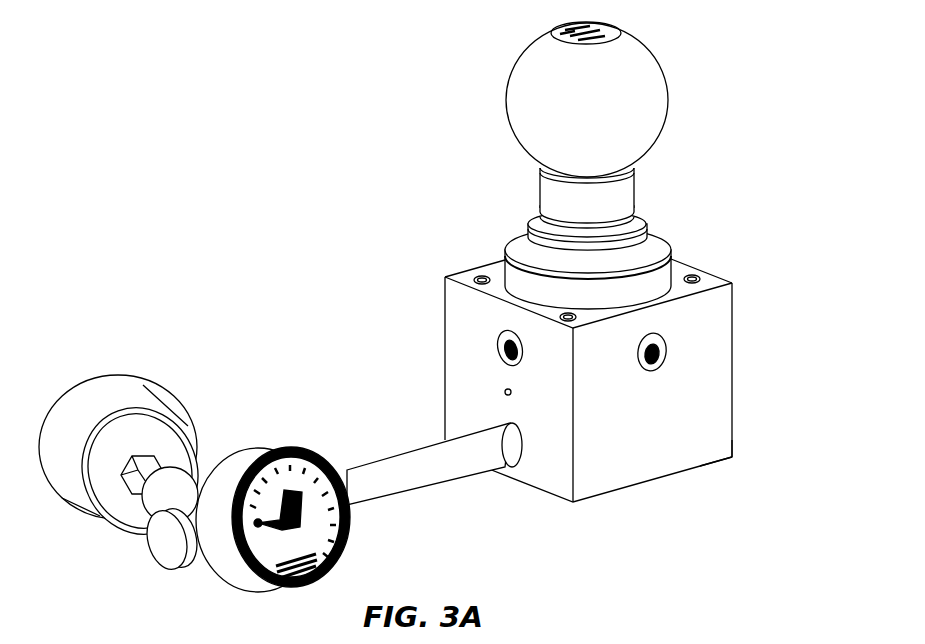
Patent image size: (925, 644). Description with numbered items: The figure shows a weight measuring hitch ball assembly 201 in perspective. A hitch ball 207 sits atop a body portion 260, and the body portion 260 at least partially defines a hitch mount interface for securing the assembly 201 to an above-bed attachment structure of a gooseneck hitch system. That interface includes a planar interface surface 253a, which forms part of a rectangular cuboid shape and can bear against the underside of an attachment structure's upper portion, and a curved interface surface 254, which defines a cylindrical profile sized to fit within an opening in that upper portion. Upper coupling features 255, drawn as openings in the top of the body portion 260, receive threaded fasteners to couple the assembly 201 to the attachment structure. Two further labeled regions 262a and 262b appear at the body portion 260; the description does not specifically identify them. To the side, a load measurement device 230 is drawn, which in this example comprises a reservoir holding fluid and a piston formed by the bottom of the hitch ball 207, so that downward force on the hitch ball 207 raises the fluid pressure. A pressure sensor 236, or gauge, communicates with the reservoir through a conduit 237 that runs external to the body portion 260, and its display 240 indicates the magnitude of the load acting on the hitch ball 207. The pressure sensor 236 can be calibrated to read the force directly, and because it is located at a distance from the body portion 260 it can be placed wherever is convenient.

The weight measuring hitch ball assembly 201 is at (255, 50).
The hitch ball 207 is at (480, 43).
The body portion 260 is at (493, 248).
The coupling features 255 is at (473, 273).
The curved interface surface 254 is at (653, 273).
The first port 262a is at (762, 265).
The second port 262b is at (774, 433).
The planar interface surface 253a is at (500, 292).
The load measurement device 230 is at (205, 350).
The pressure sensor 236 is at (298, 428).
The conduit 237 is at (420, 475).
The display 240 is at (262, 547).